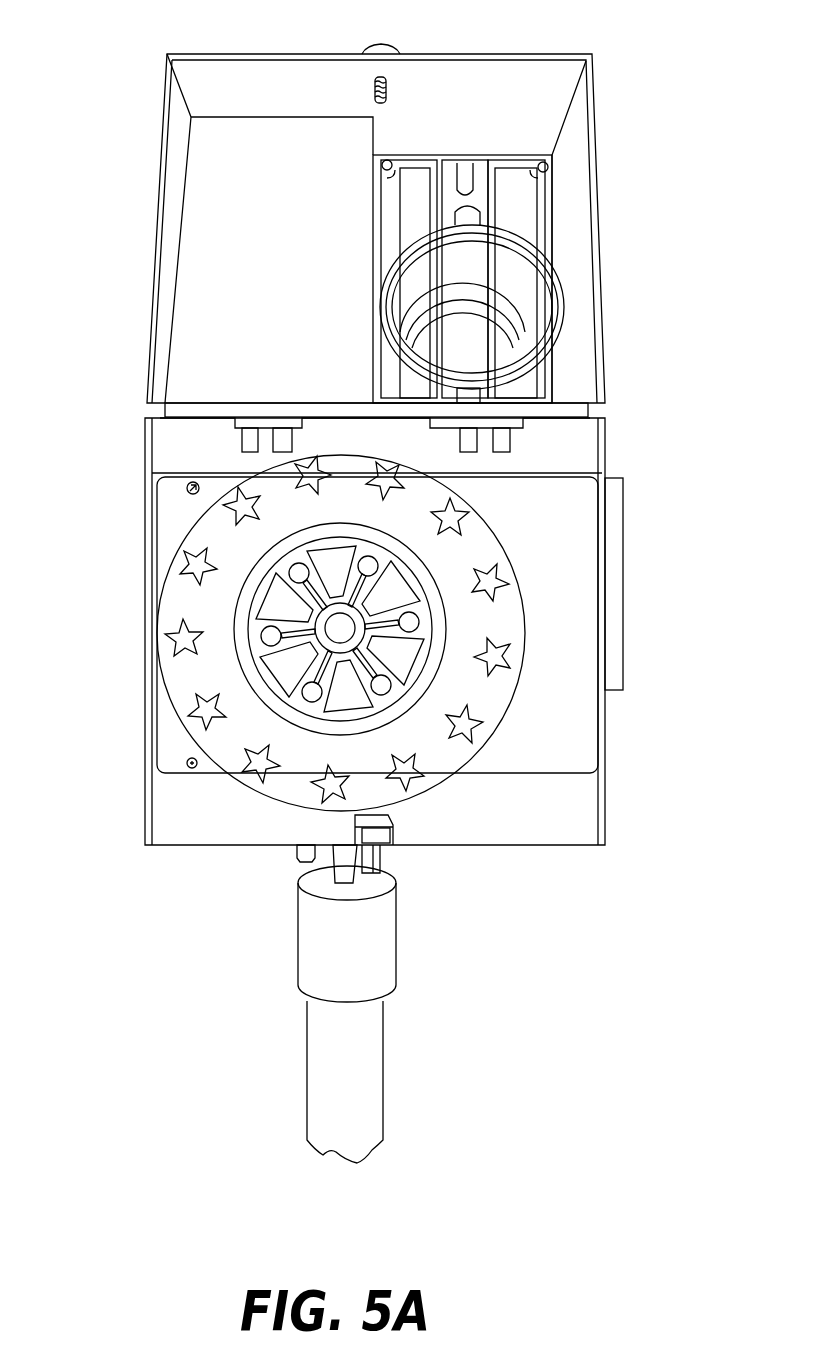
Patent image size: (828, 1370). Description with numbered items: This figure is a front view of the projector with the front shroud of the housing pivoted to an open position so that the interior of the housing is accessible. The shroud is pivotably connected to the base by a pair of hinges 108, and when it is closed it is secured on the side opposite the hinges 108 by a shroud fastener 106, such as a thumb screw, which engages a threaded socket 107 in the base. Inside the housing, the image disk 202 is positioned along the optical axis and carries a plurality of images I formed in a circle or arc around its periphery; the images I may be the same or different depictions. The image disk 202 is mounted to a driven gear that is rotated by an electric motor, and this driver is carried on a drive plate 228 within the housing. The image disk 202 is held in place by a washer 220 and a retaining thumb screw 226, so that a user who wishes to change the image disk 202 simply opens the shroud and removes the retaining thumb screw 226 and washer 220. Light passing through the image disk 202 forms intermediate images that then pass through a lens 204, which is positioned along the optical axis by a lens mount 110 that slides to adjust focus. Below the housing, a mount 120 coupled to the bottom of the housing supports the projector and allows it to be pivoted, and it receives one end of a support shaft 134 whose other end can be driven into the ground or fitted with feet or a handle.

The shroud fastener 106 is at (382, 47).
The lens mount 110 is at (517, 218).
The lens 204 is at (472, 314).
The hinges 108 is at (237, 425).
The drive plate 228 is at (165, 512).
The image disk 202 is at (198, 523).
The retaining thumb screw 226 is at (338, 627).
The washer 220 is at (375, 629).
The images I is at (170, 648).
The threaded socket 107 is at (395, 833).
The mount 120 is at (252, 887).
The support shaft 134 is at (318, 1025).